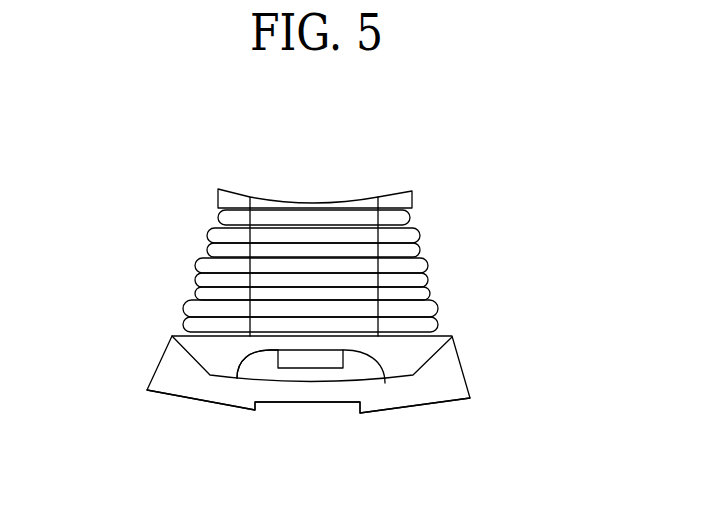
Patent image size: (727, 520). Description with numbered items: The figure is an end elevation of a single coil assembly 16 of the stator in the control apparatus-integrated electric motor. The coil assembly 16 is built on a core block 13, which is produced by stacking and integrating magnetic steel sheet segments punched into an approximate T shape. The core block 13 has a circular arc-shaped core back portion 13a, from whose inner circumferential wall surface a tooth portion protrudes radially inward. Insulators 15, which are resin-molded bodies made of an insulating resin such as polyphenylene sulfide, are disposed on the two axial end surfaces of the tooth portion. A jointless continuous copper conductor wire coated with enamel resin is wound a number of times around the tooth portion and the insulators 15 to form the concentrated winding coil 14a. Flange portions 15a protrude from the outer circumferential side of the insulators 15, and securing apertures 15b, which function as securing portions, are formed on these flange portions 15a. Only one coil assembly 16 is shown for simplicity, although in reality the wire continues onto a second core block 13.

The coil assembly 16 is at (98, 106).
The concentrated winding coil 14a is at (428, 265).
The core block 13 is at (467, 363).
The core back portion 13a is at (445, 392).
The insulator 15 is at (188, 353).
The flange portion 15a is at (234, 356).
The securing aperture 15b is at (314, 362).